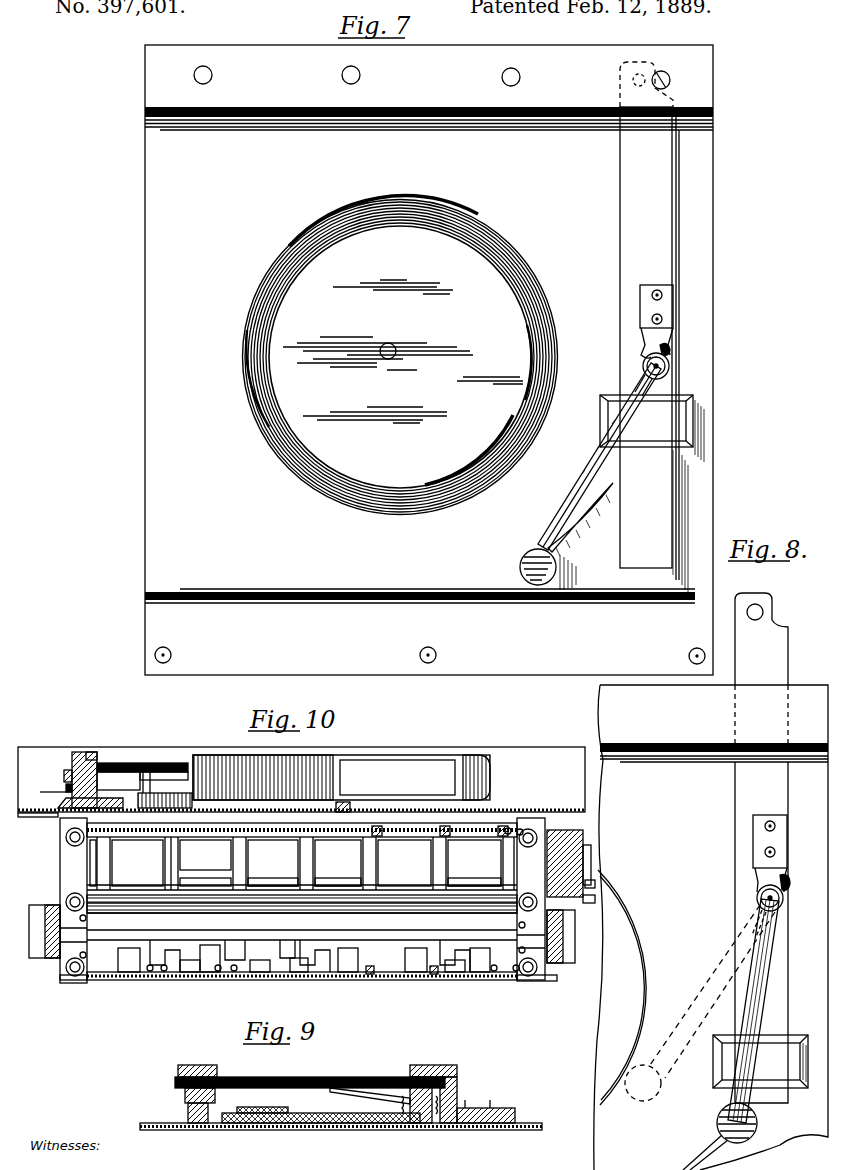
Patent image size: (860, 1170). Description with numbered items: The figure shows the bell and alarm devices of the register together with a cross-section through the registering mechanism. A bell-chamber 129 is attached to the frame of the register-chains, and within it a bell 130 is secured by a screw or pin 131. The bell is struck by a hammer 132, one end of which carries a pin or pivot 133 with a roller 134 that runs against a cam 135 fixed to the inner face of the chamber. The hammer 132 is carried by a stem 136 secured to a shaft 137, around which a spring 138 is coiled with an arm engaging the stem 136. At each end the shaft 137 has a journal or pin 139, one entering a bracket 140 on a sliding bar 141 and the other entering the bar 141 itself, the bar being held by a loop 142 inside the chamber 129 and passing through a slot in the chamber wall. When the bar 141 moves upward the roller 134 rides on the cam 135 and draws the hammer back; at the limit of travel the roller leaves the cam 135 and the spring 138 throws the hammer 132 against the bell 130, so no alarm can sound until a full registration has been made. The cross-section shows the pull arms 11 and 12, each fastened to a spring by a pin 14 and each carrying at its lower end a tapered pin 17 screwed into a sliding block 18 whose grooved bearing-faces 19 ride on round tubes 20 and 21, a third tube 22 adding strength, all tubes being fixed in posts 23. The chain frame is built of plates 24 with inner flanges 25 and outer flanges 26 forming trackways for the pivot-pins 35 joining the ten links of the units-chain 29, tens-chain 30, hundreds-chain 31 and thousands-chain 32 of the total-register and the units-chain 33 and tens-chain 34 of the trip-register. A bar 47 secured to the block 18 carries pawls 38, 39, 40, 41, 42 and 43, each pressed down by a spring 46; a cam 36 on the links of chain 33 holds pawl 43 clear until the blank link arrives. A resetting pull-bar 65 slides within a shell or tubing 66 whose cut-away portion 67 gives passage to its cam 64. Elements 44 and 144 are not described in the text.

In FIG. 10, the arm 11 is at (558, 978).
In FIG. 10, the arm 12 is at (62, 976).
In FIG. 10, the pin 14 is at (169, 863).
In FIG. 10, the pin 17 is at (44, 934).
In FIG. 10, the sliding block 18 is at (579, 958).
In FIG. 10, the bearing-face 19 is at (300, 931).
In FIG. 10, the tube 20 is at (76, 978).
In FIG. 10, the tube 21 is at (66, 898).
In FIG. 10, the tube 22 is at (66, 840).
In FIG. 10, the post 23 is at (302, 899).
In FIG. 10, the plate 24 is at (305, 864).
In FIG. 10, the inner flange 25 is at (520, 829).
In FIG. 10, the outer flange 26 is at (508, 828).
In FIG. 10, the units-chain 29 is at (330, 852).
In FIG. 10, the tens-chain 30 is at (273, 863).
In FIG. 10, the hundreds-chain 31 is at (188, 852).
In FIG. 10, the thousands-chain 32 is at (137, 863).
In FIG. 10, the units-chain 33 is at (462, 850).
In FIG. 10, the tens-chain 34 is at (259, 863).
In FIG. 10, the pivot-pin 35 is at (376, 826).
In FIG. 10, the cam 36 is at (190, 884).
In FIG. 10, the pawl 38 is at (348, 973).
In FIG. 10, the pawl 39 is at (299, 973).
In FIG. 10, the pawl 40 is at (210, 973).
In FIG. 10, the pawl 41 is at (128, 974).
In FIG. 10, the pawl 42 is at (480, 973).
In FIG. 10, the pawl 43 is at (416, 973).
In FIG. 10, the arm 44 is at (236, 940).
In FIG. 10, the spring 46 is at (160, 940).
In FIG. 10, the bar 47 is at (288, 940).
In FIG. 10, the cam 64 is at (596, 900).
In FIG. 10, the pull-bar 65 is at (592, 870).
In FIG. 10, the shell or tubing 66 is at (584, 848).
In FIG. 10, the cut-away portion 67 is at (596, 884).
In FIG. 7, the bell-chamber 129 is at (429, 360).
In FIG. 8, the bell-chamber 129 is at (711, 927).
In FIG. 10, the bell-chamber 129 is at (542, 812).
In FIG. 9, the bell-chamber 129 is at (348, 1130).
In FIG. 7, the bell 130 is at (400, 355).
In FIG. 8, the bell 130 is at (647, 972).
In FIG. 10, the bell 130 is at (305, 775).
In FIG. 7, the screw or pin 131 is at (396, 355).
In FIG. 10, the screw or pin 131 is at (343, 802).
In FIG. 7, the hammer 132 is at (525, 559).
In FIG. 8, the hammer 132 is at (718, 1116).
In FIG. 10, the hammer 132 is at (200, 755).
In FIG. 9, the hammer 132 is at (190, 1065).
In FIG. 9, the pin or pivot 133 is at (185, 1097).
In FIG. 7, the roller 134 is at (530, 568).
In FIG. 8, the roller 134 is at (757, 1126).
In FIG. 9, the roller 134 is at (188, 1118).
In FIG. 7, the cam 135 is at (614, 537).
In FIG. 8, the cam 135 is at (694, 1152).
In FIG. 10, the cam 135 is at (165, 793).
In FIG. 7, the stem 136 is at (586, 470).
In FIG. 8, the stem 136 is at (742, 1018).
In FIG. 10, the stem 136 is at (150, 762).
In FIG. 9, the stem 136 is at (310, 1071).
In FIG. 7, the shaft 137 is at (670, 370).
In FIG. 8, the shaft 137 is at (784, 899).
In FIG. 10, the shaft 137 is at (76, 770).
In FIG. 9, the shaft 137 is at (434, 1095).
In FIG. 7, the spring 138 is at (632, 378).
In FIG. 8, the spring 138 is at (756, 920).
In FIG. 10, the spring 138 is at (112, 763).
In FIG. 9, the spring 138 is at (358, 1086).
In FIG. 7, the journal or pin 139 is at (668, 356).
In FIG. 8, the journal or pin 139 is at (786, 888).
In FIG. 10, the journal or pin 139 is at (90, 752).
In FIG. 9, the journal or pin 139 is at (398, 1114).
In FIG. 7, the bracket 140 is at (651, 335).
In FIG. 8, the bracket 140 is at (764, 870).
In FIG. 9, the bracket 140 is at (457, 1075).
In FIG. 7, the sliding bar 141 is at (654, 328).
In FIG. 8, the sliding bar 141 is at (786, 1002).
In FIG. 10, the sliding bar 141 is at (50, 816).
In FIG. 9, the sliding bar 141 is at (450, 1130).
In FIG. 7, the loop 142 is at (672, 418).
In FIG. 8, the loop 142 is at (760, 1061).
In FIG. 10, the loop 142 is at (60, 804).
In FIG. 9, the loop 142 is at (262, 1130).
In FIG. 10, the pin 144 is at (72, 752).